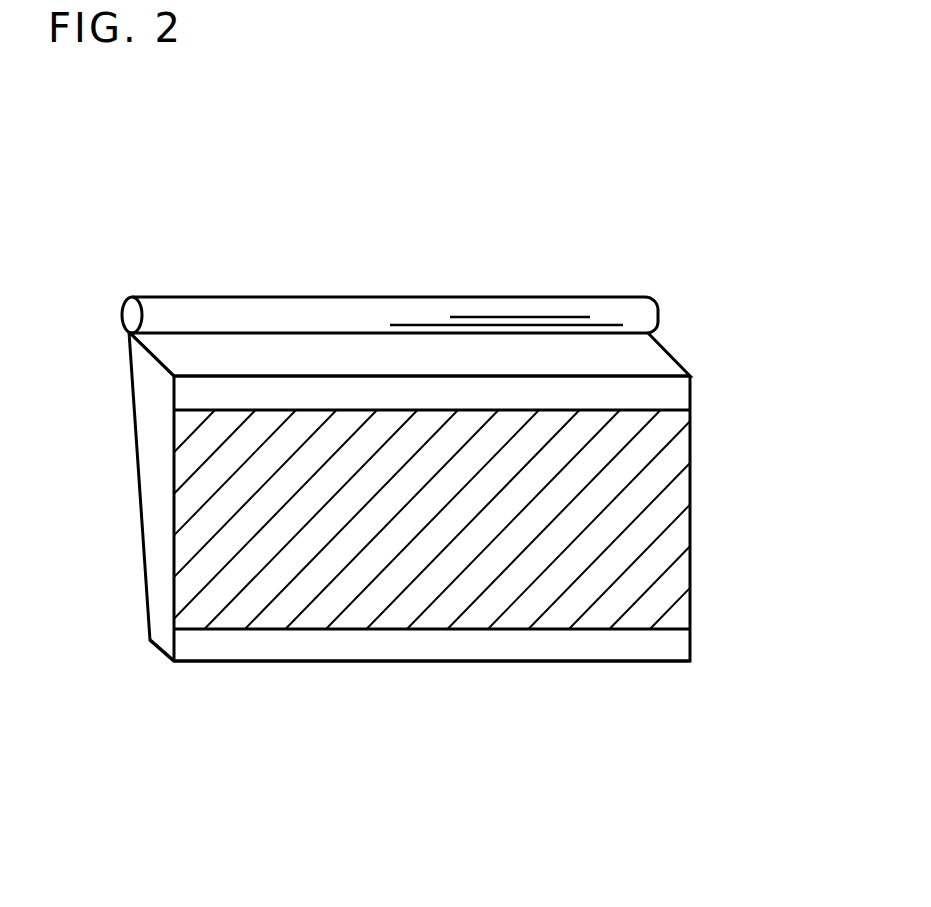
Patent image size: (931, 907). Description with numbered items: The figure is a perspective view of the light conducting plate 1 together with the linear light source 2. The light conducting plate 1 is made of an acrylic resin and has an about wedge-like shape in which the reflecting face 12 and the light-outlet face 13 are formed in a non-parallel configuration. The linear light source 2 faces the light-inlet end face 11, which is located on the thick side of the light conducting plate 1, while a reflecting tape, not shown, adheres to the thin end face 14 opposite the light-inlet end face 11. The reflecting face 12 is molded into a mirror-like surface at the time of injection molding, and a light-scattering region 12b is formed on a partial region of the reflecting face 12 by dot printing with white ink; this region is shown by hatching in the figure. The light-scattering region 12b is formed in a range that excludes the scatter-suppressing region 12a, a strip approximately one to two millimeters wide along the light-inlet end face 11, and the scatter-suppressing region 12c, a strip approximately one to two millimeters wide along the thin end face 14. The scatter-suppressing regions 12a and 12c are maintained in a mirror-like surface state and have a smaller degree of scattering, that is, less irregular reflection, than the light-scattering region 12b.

The light conducting plate 1 is at (575, 705).
The linear light source 2 is at (613, 297).
The light-inlet end face 11 is at (658, 358).
The reflecting face 12 is at (810, 385).
The scatter-suppressing region 12a is at (672, 400).
The light-scattering region 12b is at (663, 520).
The scatter-suppressing region 12c is at (672, 648).
The light-outlet face 13 is at (128, 398).
The thin end face 14 is at (160, 650).